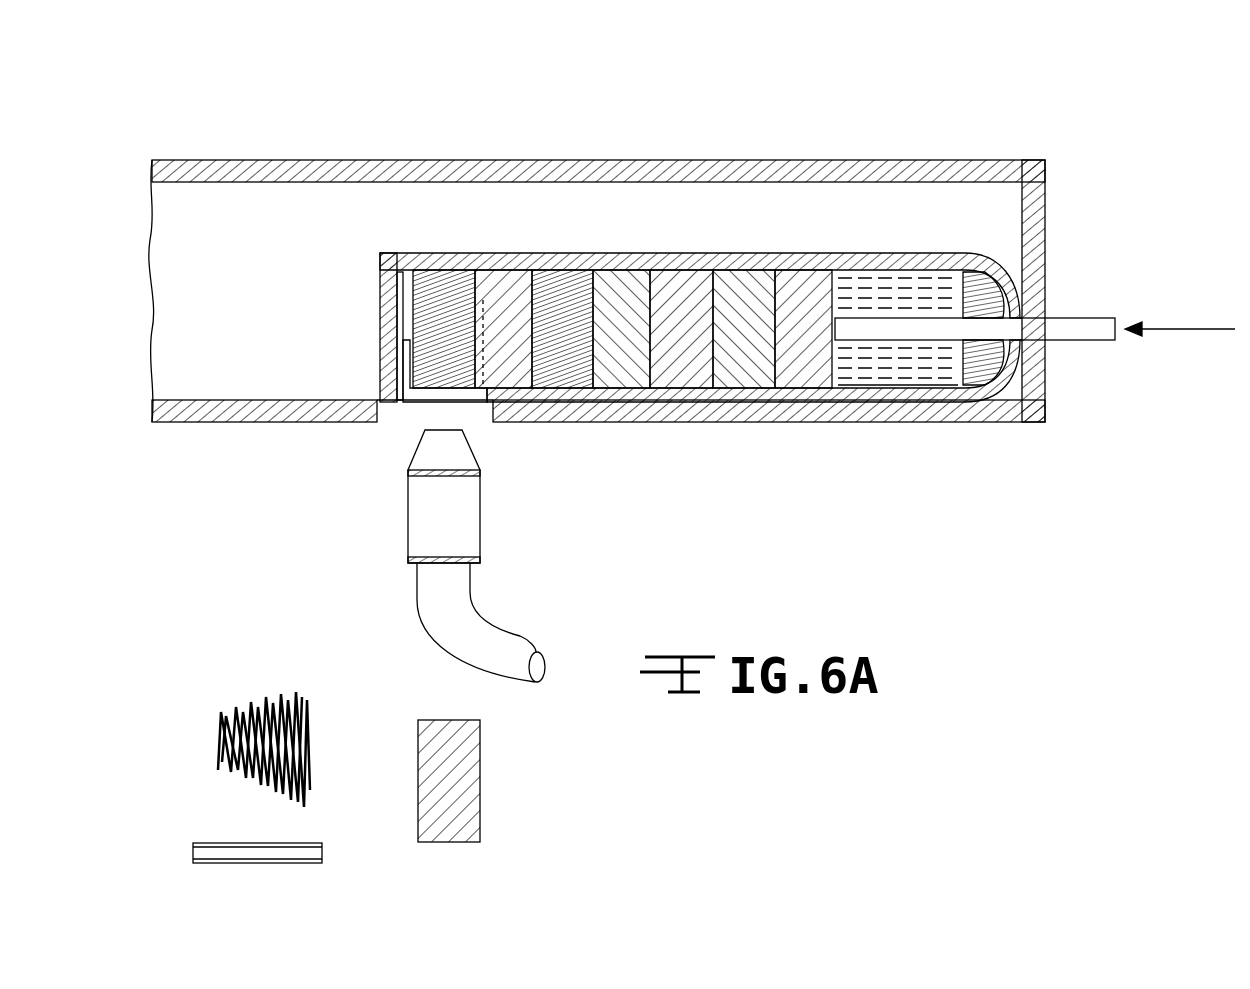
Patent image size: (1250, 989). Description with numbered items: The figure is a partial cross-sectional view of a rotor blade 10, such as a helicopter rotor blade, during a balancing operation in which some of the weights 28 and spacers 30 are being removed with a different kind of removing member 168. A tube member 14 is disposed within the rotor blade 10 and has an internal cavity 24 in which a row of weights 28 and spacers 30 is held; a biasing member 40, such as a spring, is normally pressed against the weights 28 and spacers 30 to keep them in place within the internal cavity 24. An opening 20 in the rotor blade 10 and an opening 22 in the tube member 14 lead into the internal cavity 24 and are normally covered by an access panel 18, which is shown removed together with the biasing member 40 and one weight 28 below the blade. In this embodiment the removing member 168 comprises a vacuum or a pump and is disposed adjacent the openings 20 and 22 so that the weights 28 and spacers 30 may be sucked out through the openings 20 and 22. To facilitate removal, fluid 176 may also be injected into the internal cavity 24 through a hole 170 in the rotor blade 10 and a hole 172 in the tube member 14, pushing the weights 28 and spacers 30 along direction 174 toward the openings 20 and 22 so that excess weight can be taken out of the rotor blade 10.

The rotor blade 10 is at (694, 136).
The tube member 14 is at (812, 255).
The access panel 18 is at (193, 855).
The opening 20 is at (400, 415).
The opening 22 is at (398, 382).
The internal cavity 24 is at (400, 295).
The weight 28 is at (628, 370).
The spacer 30 is at (460, 278).
The biasing member 40 is at (218, 735).
The removing member 168 is at (1085, 340).
The hole 170 is at (1045, 300).
The hole 172 is at (1012, 303).
The direction 174 is at (872, 300).
The fluid 176 is at (927, 377).